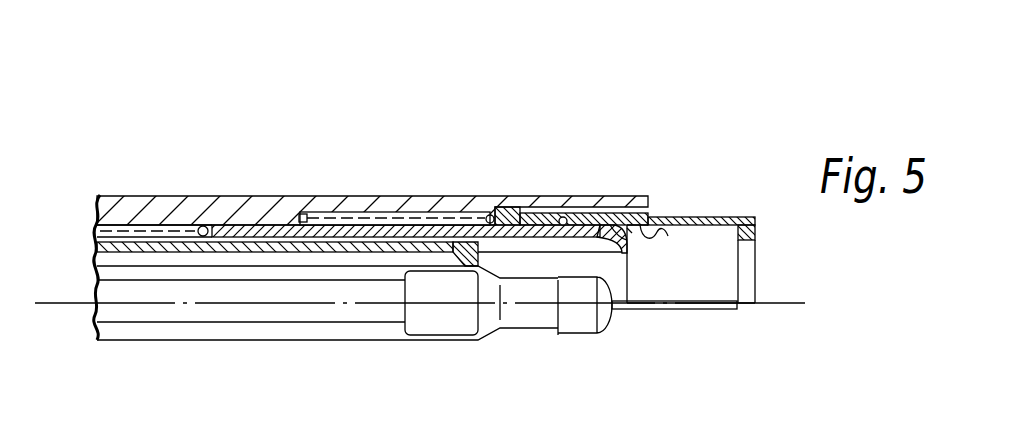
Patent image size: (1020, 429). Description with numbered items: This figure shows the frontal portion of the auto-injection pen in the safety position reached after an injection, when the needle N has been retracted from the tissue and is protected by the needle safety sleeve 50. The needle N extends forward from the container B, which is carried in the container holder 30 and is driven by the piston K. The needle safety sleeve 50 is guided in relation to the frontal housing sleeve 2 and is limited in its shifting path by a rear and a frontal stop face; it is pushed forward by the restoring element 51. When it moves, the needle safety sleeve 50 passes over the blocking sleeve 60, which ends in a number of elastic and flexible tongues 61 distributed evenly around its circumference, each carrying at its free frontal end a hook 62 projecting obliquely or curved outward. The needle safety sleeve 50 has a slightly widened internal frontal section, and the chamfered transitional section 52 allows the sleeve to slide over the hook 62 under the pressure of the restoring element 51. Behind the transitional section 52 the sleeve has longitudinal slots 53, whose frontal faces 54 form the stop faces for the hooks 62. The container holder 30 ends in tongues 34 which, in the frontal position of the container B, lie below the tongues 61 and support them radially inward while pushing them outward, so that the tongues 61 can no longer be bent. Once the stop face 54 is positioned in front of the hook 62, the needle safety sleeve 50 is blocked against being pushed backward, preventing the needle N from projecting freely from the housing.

The housing sleeve 2 is at (242, 210).
The container holder 30 is at (162, 240).
The blocking sleeve 60 is at (366, 228).
The tongues 34 is at (520, 247).
The restoring element 51 is at (457, 213).
The longitudinal slots 53 is at (608, 222).
The tongues 61 is at (566, 226).
The frontal faces 54 is at (623, 228).
The needle safety sleeve 50 is at (692, 216).
The transitional section 52 is at (665, 235).
The hook 62 is at (628, 228).
The piston K is at (443, 325).
The container B is at (577, 322).
The needle N is at (652, 310).